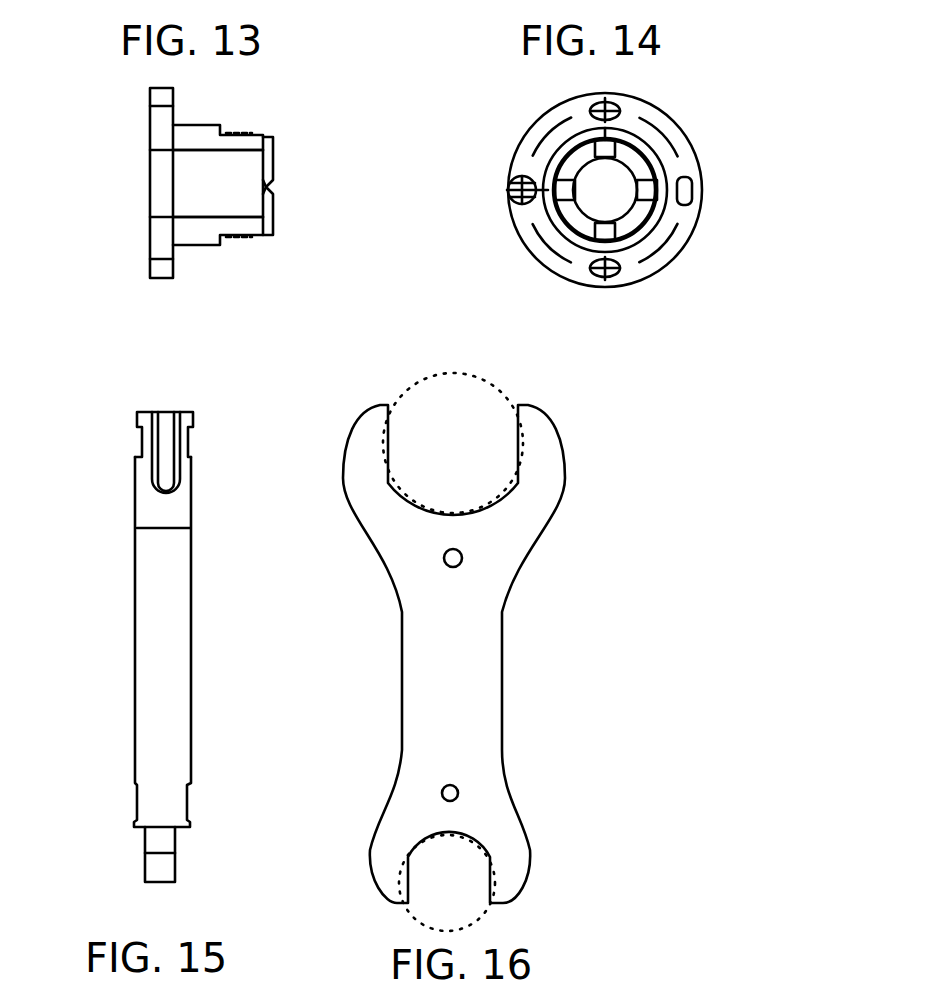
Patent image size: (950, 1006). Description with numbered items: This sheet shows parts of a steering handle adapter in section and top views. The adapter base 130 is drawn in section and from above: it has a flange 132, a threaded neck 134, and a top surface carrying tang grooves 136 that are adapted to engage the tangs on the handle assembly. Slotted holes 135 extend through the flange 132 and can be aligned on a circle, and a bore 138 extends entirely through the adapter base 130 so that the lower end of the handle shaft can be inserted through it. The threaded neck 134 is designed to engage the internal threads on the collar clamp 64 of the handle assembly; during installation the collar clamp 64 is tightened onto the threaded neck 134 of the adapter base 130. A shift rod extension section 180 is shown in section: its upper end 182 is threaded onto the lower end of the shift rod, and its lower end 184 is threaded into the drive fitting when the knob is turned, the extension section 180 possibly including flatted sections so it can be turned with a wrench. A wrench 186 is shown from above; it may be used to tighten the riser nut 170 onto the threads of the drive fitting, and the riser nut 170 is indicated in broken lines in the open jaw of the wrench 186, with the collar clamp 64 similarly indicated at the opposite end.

In FIG. 13, the adapter base 130 is at (197, 255).
In FIG. 13, the flange 132 is at (158, 282).
In FIG. 13, the threaded neck 134 is at (253, 130).
In FIG. 13, the tang grooves 136 is at (272, 185).
In FIG. 14, the tang grooves 136 is at (650, 186).
In FIG. 13, the bore 138 is at (198, 175).
In FIG. 14, the bore 138 is at (602, 195).
In FIG. 14, the slotted holes 135 is at (695, 190).
In FIG. 16, the riser nut 170 is at (477, 382).
In FIG. 15, the shift rod extension section 180 is at (192, 658).
In FIG. 15, the upper end 182 is at (173, 413).
In FIG. 15, the lower end 184 is at (177, 862).
In FIG. 16, the wrench 186 is at (502, 643).
In FIG. 16, the collar clamp 64 is at (472, 915).